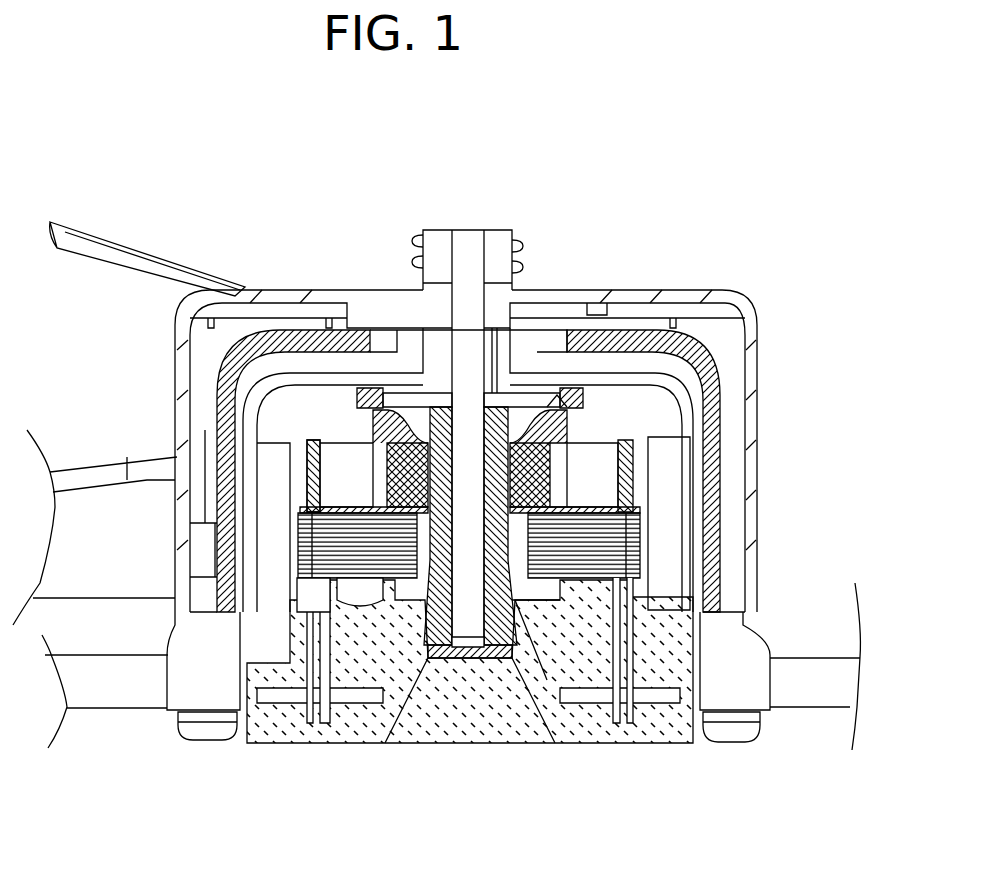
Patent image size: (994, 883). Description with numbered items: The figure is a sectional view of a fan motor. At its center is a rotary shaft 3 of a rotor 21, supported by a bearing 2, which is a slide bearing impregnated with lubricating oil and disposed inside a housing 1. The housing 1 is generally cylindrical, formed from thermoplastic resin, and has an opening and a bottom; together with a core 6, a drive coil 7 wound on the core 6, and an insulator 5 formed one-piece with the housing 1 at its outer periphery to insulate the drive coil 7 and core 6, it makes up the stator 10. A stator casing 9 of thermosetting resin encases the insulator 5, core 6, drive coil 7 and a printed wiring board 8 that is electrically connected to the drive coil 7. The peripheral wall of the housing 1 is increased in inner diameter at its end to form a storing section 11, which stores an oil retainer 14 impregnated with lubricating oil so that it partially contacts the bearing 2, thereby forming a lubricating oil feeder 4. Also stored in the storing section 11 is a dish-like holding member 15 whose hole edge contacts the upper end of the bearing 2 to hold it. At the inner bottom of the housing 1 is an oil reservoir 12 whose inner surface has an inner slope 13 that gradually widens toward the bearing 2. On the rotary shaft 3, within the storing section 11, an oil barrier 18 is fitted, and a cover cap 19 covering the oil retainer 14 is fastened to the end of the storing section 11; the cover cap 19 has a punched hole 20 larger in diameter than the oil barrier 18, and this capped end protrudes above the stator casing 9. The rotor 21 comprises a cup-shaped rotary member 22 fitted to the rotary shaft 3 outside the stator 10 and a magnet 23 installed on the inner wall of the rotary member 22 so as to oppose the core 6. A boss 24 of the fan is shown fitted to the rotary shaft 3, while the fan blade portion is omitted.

The housing 1 is at (510, 613).
The bearing 2 is at (450, 657).
The rotary shaft 3 is at (465, 305).
The lubricating oil feeder 4 is at (567, 463).
The insulator 5 is at (305, 472).
The core 6 is at (363, 605).
The drive coil 7 is at (337, 700).
The printed wiring board 8 is at (298, 703).
The stator casing 9 is at (547, 680).
The stator 10 is at (332, 580).
The storing section 11 is at (352, 395).
The oil reservoir 12 is at (503, 643).
The inner slope 13 is at (450, 660).
The oil retainer 14 is at (612, 457).
The holding member 15 is at (415, 405).
The oil barrier 18 is at (493, 380).
The cover cap 19 is at (383, 393).
The punched hole 20 is at (587, 417).
The rotor 21 is at (690, 607).
The rotary member 22 is at (690, 483).
The magnet 23 is at (693, 717).
The boss 24 is at (500, 240).